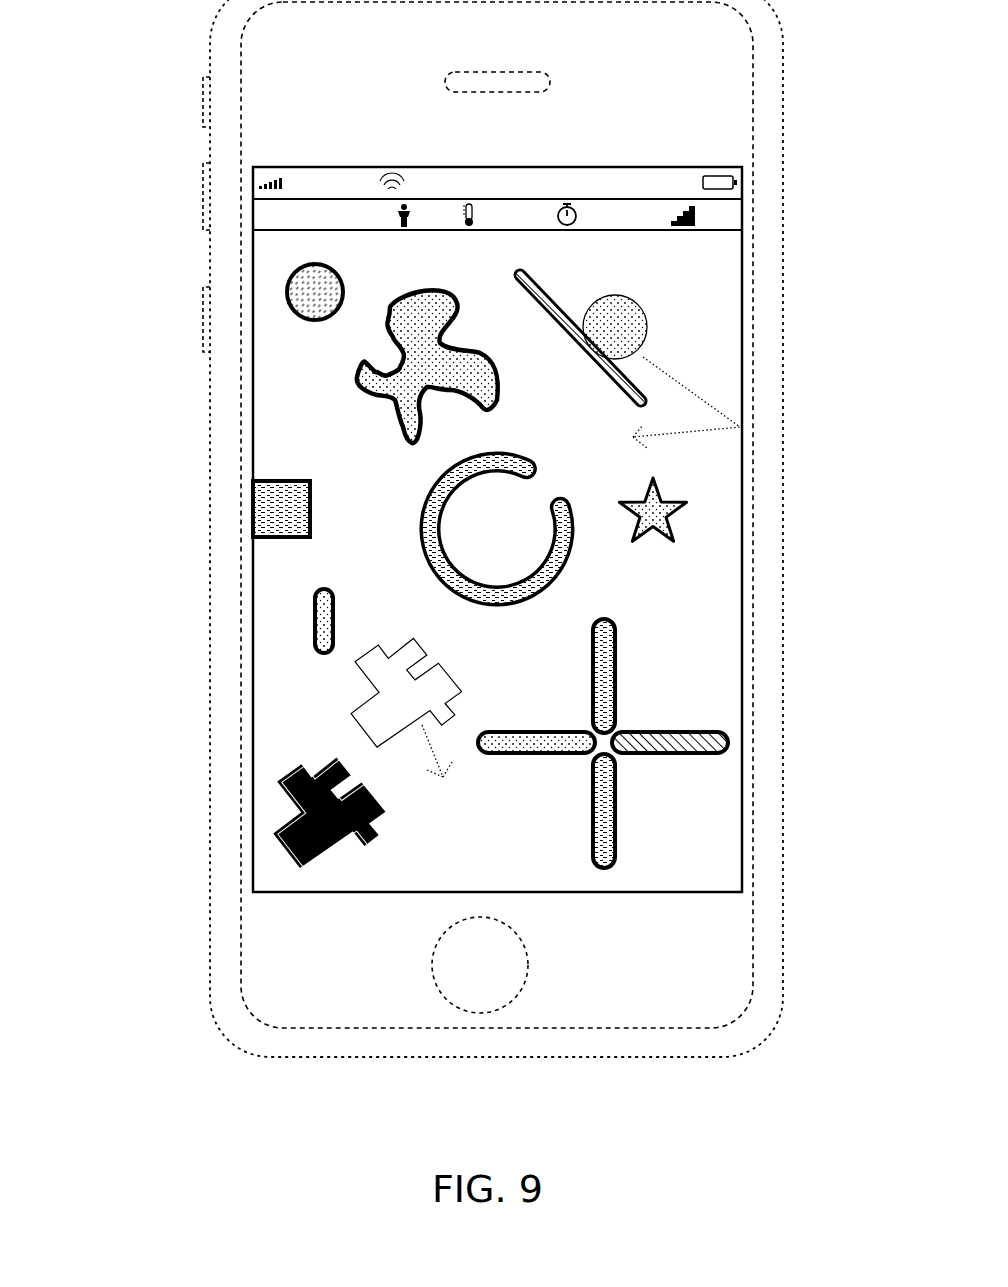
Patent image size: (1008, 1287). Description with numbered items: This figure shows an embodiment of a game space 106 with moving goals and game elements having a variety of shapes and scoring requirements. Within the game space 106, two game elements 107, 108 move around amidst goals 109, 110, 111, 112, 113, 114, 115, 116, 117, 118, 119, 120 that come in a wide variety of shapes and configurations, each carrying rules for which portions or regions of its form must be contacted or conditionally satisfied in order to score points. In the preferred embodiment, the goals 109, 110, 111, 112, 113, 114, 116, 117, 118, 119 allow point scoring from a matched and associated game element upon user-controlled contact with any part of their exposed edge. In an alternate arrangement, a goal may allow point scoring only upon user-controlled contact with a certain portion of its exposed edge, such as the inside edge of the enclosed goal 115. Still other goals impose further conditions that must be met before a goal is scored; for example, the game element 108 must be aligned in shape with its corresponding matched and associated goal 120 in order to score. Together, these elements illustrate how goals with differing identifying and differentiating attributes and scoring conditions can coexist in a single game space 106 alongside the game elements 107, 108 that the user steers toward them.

The game space 106 is at (275, 420).
The game element 107 is at (615, 327).
The game element 108 is at (388, 688).
The goal 109 is at (315, 292).
The goal 110 is at (427, 367).
The goal 111 is at (553, 310).
The goal 112 is at (275, 508).
The goal 113 is at (315, 618).
The goal 114 is at (653, 513).
The enclosed goal 115 is at (555, 567).
The goal 116 is at (603, 678).
The goal 117 is at (670, 743).
The goal 118 is at (607, 803).
The goal 119 is at (533, 740).
The goal 120 is at (312, 820).